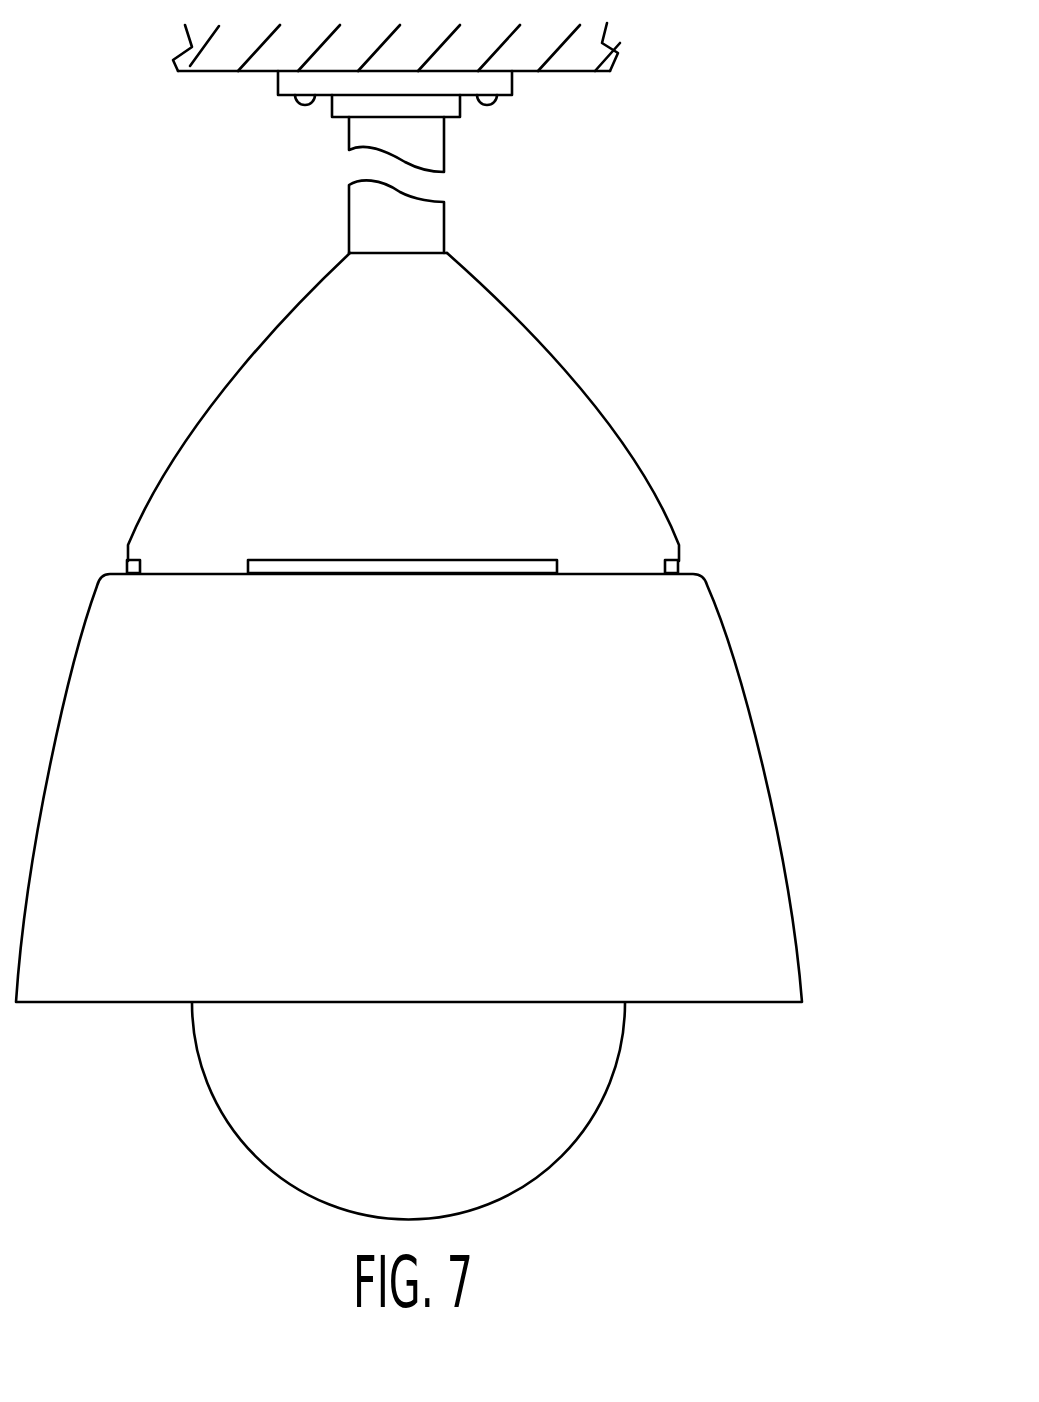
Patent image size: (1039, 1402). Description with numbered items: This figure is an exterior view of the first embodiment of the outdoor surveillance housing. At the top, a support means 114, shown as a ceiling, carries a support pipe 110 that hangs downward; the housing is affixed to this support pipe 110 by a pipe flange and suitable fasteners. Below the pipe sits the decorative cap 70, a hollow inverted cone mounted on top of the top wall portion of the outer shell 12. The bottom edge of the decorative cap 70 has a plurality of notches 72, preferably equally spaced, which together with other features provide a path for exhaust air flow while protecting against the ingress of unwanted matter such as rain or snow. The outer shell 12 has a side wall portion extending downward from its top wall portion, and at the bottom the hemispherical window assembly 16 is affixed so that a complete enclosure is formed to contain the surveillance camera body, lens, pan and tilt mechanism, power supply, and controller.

The support means 114 is at (592, 32).
The support pipe 110 is at (435, 228).
The decorative cap 70 is at (572, 407).
The notches 72 is at (125, 569).
The outer shell 12 is at (727, 700).
The window assembly 16 is at (590, 1070).